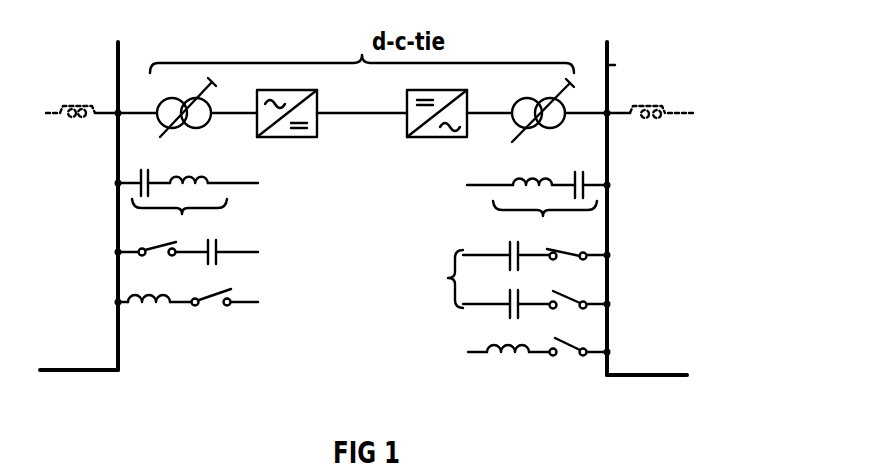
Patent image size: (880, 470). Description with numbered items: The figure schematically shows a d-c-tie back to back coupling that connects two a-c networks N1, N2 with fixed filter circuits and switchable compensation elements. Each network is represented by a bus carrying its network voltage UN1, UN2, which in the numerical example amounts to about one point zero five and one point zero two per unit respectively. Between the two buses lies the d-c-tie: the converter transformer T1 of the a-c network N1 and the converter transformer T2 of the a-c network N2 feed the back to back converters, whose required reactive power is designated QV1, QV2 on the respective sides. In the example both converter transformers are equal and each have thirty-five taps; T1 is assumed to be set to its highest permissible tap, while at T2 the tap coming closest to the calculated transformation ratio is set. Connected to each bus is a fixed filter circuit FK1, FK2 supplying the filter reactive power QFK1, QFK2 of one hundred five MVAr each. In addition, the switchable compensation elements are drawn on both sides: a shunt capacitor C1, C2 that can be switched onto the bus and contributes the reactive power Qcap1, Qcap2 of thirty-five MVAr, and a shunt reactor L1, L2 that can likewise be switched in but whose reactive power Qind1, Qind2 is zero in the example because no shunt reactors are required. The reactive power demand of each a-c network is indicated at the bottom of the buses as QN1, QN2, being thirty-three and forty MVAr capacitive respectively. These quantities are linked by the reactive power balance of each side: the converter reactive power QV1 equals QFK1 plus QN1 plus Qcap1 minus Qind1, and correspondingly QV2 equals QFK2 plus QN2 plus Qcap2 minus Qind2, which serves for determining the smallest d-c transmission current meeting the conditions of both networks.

The first a-c network N1 is at (87, 191).
The second a-c network N2 is at (643, 195).
The network voltage of network N1 UN1 is at (93, 68).
The network voltage of network N2 UN2 is at (628, 69).
The required reactive power of the converter on network N1 QV1 is at (88, 119).
The required reactive power of the converter on network N2 QV2 is at (647, 120).
The converter transformer of network N1 T1 is at (187, 101).
The converter transformer of network N2 T2 is at (559, 106).
The filter circuit of network N1 FK1 is at (205, 185).
The filter circuit of network N2 FK2 is at (513, 187).
The reactive power of filter circuit FK1 QFK1 is at (179, 220).
The reactive power of filter circuit FK2 QFK2 is at (545, 221).
The reactive power of shunt capacitor C1 Qcap1 is at (185, 259).
The reactive power of shunt capacitor C2 Qcap2 is at (527, 279).
The shunt capacitor of network N1 C1 is at (206, 264).
The shunt capacitor of network N2 C2 is at (519, 266).
The reactive power of shunt reactor on network N1 Qind1 is at (184, 292).
The reactive power of shunt reactor on network N2 Qind2 is at (540, 342).
The shunt reactor of network N1 L1 is at (162, 290).
The shunt reactor of network N2 L2 is at (526, 323).
The reactive power demand of network N1 QN1 is at (126, 397).
The reactive power demand of network N2 QN2 is at (650, 399).